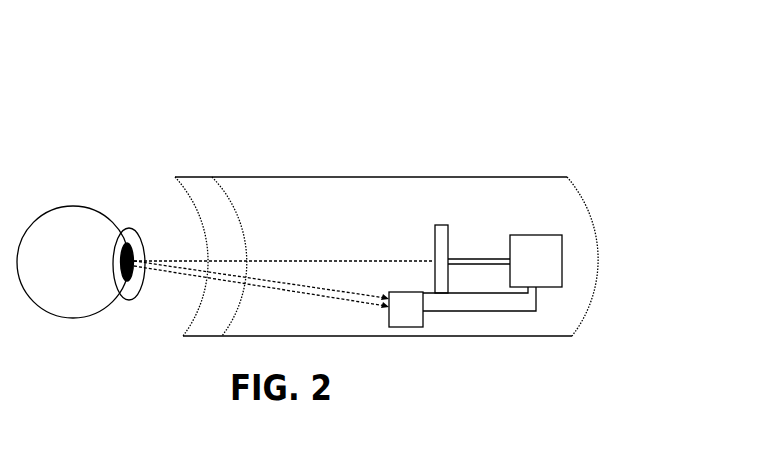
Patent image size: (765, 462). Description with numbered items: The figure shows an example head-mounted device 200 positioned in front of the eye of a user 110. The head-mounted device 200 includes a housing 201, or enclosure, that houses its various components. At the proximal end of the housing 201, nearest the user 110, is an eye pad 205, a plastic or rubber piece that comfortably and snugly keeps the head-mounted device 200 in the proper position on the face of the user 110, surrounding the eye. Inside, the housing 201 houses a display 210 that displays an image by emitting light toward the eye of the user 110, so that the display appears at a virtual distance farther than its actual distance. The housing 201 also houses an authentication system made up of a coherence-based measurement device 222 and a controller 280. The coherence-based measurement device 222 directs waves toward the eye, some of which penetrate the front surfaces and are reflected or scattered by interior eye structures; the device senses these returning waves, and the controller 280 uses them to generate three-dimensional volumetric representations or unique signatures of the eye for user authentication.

The head-mounted device 200 is at (143, 113).
The user 110 is at (106, 201).
The eye pad 205 is at (206, 185).
The housing 201 is at (359, 185).
The display 210 is at (447, 255).
The coherence-based measurement device 222 is at (389, 312).
The controller 280 is at (562, 261).